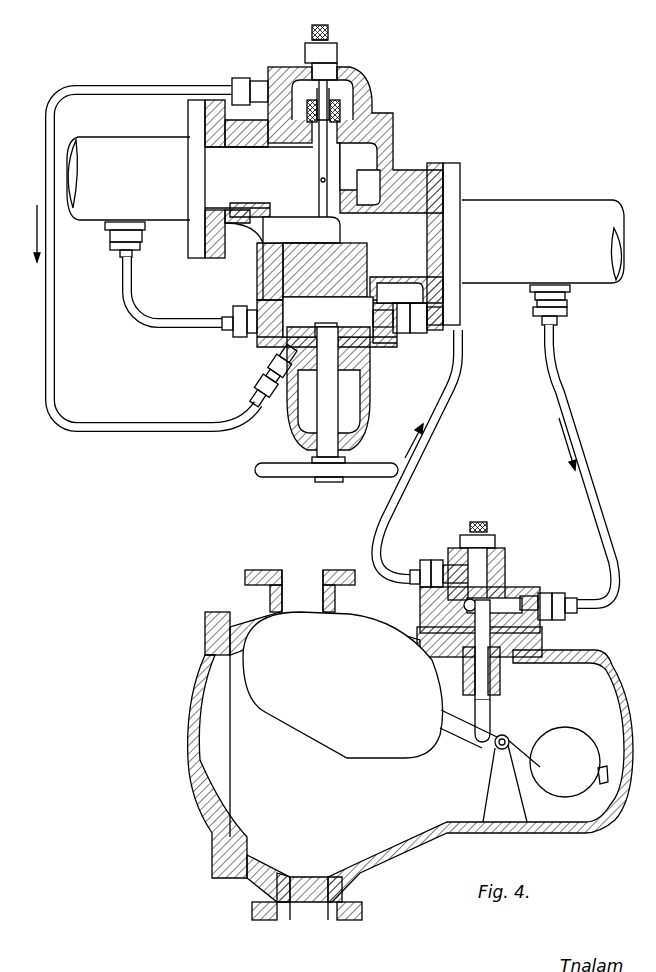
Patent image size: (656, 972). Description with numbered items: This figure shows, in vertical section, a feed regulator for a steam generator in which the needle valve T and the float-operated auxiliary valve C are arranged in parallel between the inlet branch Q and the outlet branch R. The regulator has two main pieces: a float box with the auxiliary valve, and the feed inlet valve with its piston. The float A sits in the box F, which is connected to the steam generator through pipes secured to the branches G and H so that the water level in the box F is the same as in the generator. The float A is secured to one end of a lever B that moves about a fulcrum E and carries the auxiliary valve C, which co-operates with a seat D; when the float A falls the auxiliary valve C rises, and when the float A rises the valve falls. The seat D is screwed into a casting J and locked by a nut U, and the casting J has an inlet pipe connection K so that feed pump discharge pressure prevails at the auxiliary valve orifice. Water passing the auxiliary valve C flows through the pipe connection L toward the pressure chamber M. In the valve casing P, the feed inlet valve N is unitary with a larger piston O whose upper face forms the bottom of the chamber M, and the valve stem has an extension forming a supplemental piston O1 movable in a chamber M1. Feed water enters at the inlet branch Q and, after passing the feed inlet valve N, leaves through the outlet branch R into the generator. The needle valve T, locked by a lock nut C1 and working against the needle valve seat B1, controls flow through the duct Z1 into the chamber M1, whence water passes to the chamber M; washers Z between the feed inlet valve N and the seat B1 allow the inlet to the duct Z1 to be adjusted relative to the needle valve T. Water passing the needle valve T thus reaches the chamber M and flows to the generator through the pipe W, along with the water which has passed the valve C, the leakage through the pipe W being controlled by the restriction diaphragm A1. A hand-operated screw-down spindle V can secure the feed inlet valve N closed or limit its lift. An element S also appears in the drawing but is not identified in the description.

The lock nut C1 is at (305, 53).
The needle valve T is at (322, 92).
The chamber M1 is at (346, 92).
The washers Z is at (337, 101).
The needle valve seat B1 is at (303, 108).
The packing gland S is at (341, 111).
The outlet branch R is at (258, 180).
The duct Z1 is at (318, 150).
The supplemental piston O1 is at (358, 166).
The feed inlet valve N is at (368, 187).
The valve casing P is at (410, 203).
The inlet branch Q is at (433, 250).
The piston O is at (325, 270).
The pipe W is at (165, 315).
The pressure chamber M is at (328, 317).
The restriction diaphragm A1 is at (260, 344).
The hand-operated screw-down spindle V is at (326, 404).
The pipe connection L is at (437, 407).
The inlet pipe connection K is at (582, 447).
The nut U is at (489, 541).
The casting J is at (492, 566).
The auxiliary valve seat D is at (488, 591).
The auxiliary valve C is at (466, 608).
The branch H is at (300, 591).
The float A is at (343, 685).
The lever B is at (457, 727).
The fulcrum E is at (496, 748).
The box F is at (503, 826).
The branch G is at (307, 896).